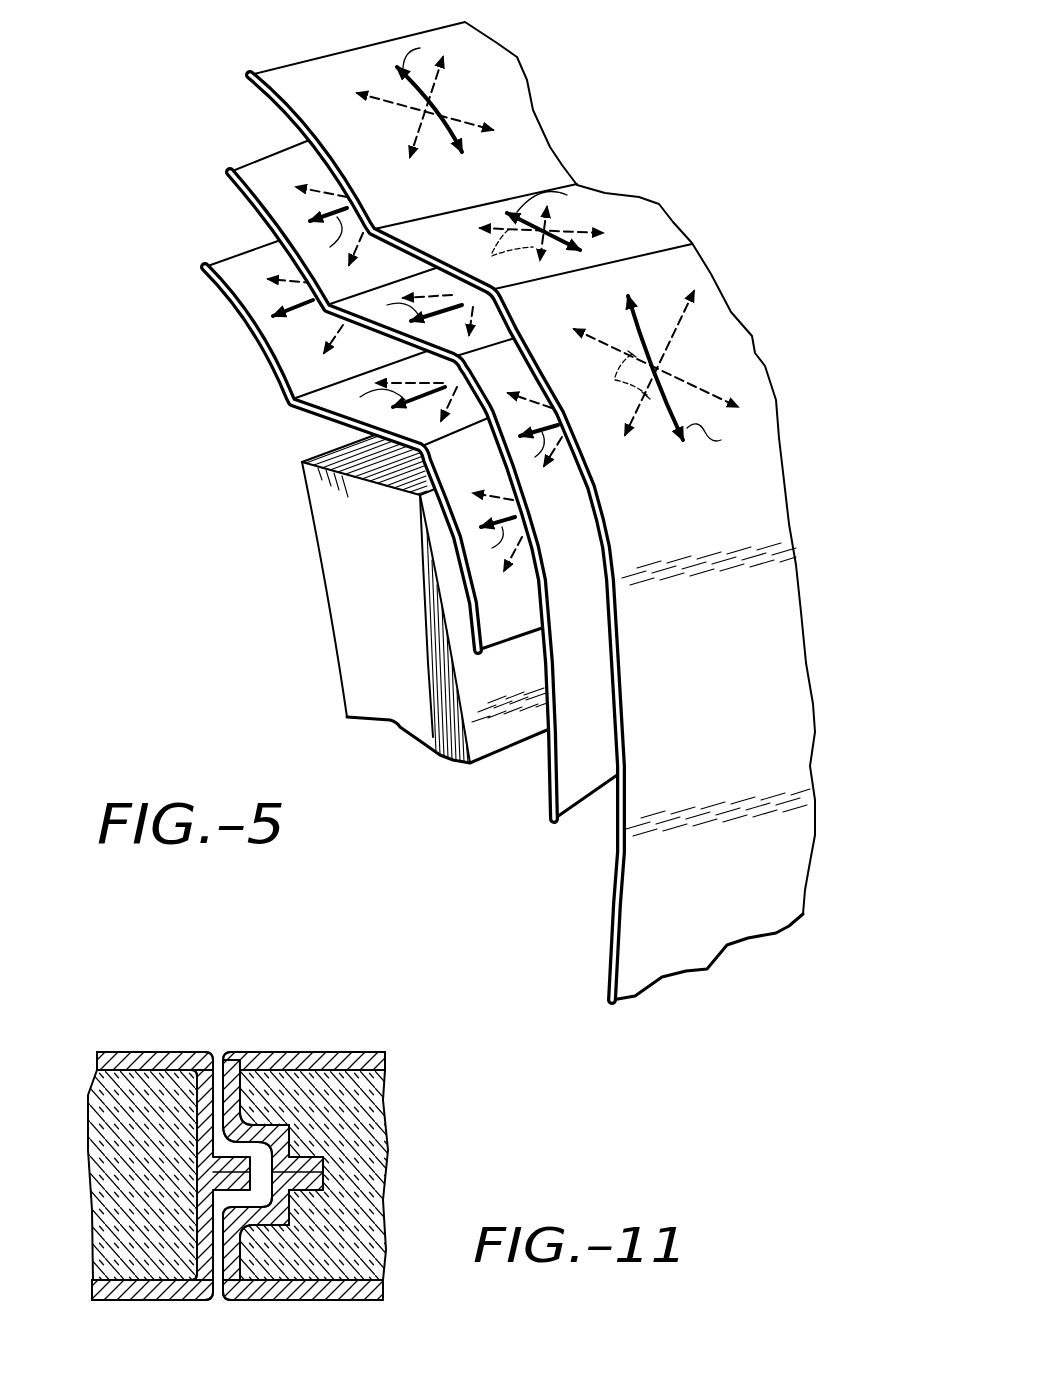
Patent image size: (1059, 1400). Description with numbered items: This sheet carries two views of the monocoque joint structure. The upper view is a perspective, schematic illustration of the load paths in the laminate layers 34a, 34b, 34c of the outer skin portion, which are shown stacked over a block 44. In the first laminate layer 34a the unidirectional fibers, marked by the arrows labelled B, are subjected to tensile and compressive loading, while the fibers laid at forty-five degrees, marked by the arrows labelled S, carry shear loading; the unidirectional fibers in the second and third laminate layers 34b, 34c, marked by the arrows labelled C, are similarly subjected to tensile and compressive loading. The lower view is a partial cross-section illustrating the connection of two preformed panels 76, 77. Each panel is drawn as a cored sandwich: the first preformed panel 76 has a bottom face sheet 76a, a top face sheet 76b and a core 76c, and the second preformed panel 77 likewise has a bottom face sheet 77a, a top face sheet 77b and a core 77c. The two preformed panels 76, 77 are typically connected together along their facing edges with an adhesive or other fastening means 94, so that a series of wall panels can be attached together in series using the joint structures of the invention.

In FIG. 5, the laminate layer 34a is at (337, 52).
In FIG. 5, the laminate layer 34b is at (260, 153).
In FIG. 5, the laminate layer 34c is at (238, 310).
In FIG. 5, the block / mandrel 44 is at (355, 582).
In FIG. 11, the preformed panel 76 is at (138, 1082).
In FIG. 11, the bottom face sheet of first member 76a is at (140, 1292).
In FIG. 11, the top face sheet of first member 76b is at (120, 1050).
In FIG. 11, the core of first member 76c is at (110, 1208).
In FIG. 11, the preformed panel 77 is at (297, 1082).
In FIG. 11, the bottom face sheet of second member 77a is at (287, 1292).
In FIG. 11, the top face sheet of second member 77b is at (330, 1050).
In FIG. 11, the core of second member 77c is at (372, 1181).
In FIG. 11, the adhesive or other fastening means 94 is at (222, 1052).